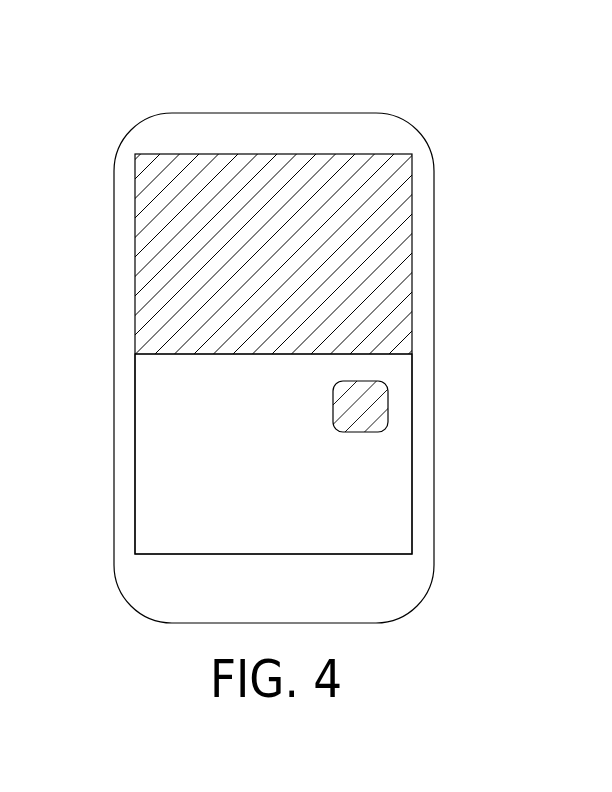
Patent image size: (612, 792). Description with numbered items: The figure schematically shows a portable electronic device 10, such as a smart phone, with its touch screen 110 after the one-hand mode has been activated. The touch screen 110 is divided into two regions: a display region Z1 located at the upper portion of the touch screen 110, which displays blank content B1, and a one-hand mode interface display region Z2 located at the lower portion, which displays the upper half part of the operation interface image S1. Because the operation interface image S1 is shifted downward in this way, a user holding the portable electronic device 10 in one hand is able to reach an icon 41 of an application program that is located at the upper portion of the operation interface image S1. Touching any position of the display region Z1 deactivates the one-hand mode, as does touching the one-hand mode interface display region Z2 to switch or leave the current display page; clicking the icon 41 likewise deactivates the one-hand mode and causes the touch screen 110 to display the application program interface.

The portable electronic device 10 is at (256, 112).
The touch screen 110 is at (302, 153).
The display region Z1 is at (135, 255).
The one-hand mode interface display region Z2 is at (135, 470).
The blank content B1 is at (300, 282).
The icon of an application program 41 is at (372, 398).
The operation interface image S1 is at (300, 490).